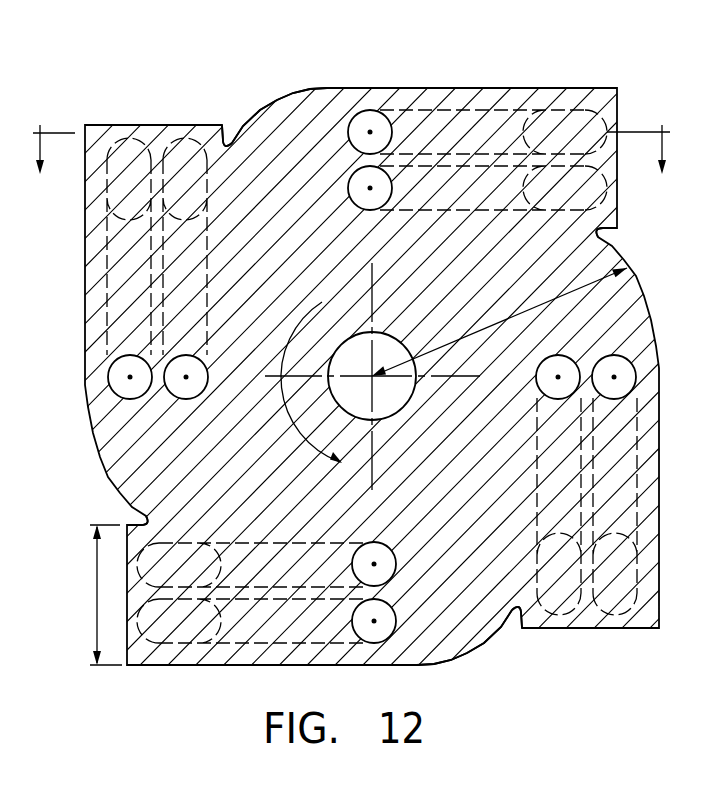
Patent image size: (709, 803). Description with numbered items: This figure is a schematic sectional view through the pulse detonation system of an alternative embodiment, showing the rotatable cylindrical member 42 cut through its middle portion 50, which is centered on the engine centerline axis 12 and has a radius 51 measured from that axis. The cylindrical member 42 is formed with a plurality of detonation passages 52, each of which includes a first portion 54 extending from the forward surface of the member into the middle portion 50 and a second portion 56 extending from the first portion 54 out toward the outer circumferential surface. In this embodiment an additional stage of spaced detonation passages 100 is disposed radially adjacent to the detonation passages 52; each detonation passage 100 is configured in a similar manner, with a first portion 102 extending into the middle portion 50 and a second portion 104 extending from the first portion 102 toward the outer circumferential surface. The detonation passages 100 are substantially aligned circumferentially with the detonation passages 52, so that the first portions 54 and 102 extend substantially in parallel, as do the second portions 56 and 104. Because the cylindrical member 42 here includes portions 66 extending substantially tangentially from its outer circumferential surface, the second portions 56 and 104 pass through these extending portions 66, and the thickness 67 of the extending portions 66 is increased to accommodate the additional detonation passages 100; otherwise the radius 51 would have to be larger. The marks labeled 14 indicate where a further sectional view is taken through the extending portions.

The centerline axis 12 is at (379, 381).
The nacelle 14 is at (350, 131).
The rotatable cylindrical member 42 is at (278, 88).
The middle portion 50 is at (466, 598).
The radius 51 is at (517, 317).
The detonation passages 52 is at (533, 150).
The first portion 54 is at (348, 188).
The second portion 56 is at (590, 205).
The extending portions 66 is at (228, 128).
The thickness 67 is at (97, 597).
The detonation passages 100 is at (499, 92).
The first portion 102 is at (345, 118).
The second portion 104 is at (417, 88).